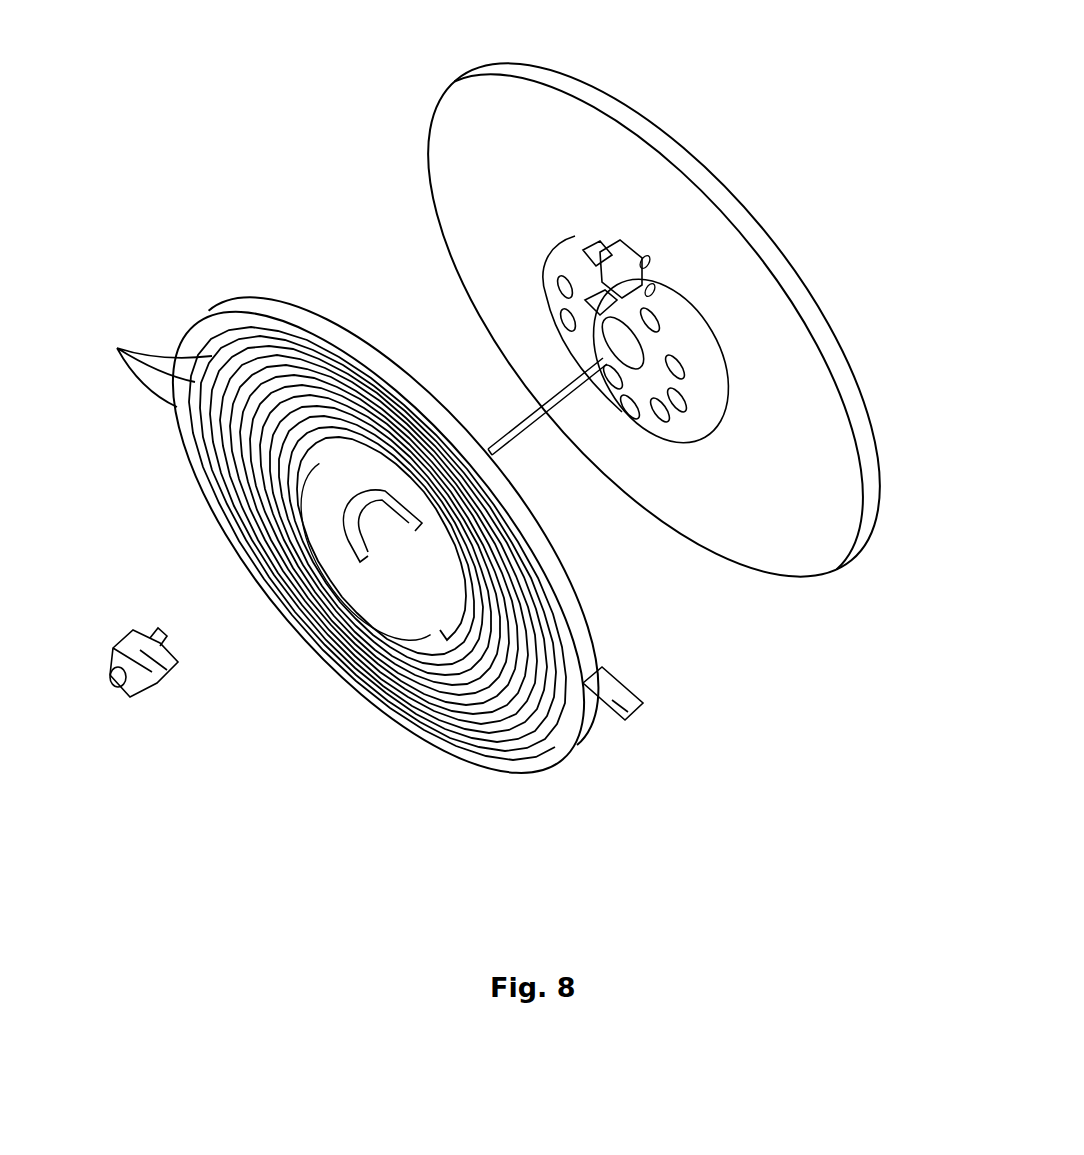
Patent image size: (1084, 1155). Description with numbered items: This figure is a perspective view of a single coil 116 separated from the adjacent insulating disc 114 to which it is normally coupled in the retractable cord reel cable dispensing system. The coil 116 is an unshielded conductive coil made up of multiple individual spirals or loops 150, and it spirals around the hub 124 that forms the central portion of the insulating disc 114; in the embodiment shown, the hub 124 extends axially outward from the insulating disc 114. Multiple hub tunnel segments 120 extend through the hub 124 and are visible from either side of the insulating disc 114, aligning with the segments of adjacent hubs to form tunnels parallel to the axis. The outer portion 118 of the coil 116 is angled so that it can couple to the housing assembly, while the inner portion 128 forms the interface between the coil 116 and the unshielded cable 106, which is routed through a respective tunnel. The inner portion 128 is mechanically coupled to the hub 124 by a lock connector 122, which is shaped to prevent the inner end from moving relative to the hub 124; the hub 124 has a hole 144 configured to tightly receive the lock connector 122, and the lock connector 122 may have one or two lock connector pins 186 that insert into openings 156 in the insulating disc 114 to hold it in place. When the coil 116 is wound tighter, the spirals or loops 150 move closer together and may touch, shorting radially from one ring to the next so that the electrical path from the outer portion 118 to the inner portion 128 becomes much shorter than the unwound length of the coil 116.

The unshielded cable 106 is at (518, 415).
The insulating disc 114 is at (757, 503).
The coil 116 is at (318, 320).
The outer portion 118 is at (633, 717).
The hub tunnel segments 120 is at (647, 313).
The lock connector 122 is at (170, 668).
The hub 124 is at (647, 347).
The inner portion 128 is at (362, 552).
The hole 144 is at (637, 263).
The spirals or loops 150 is at (141, 370).
The openings 156 is at (630, 262).
The lock connector pins 186 is at (108, 678).